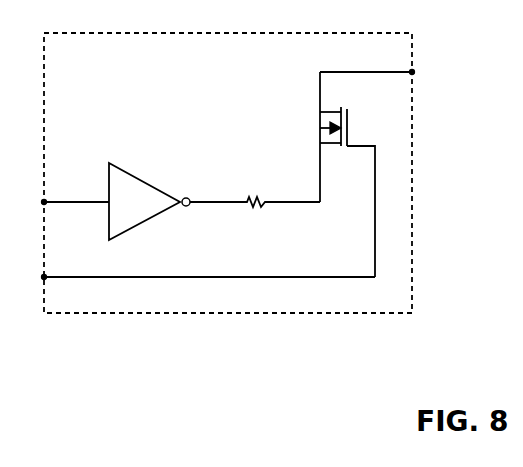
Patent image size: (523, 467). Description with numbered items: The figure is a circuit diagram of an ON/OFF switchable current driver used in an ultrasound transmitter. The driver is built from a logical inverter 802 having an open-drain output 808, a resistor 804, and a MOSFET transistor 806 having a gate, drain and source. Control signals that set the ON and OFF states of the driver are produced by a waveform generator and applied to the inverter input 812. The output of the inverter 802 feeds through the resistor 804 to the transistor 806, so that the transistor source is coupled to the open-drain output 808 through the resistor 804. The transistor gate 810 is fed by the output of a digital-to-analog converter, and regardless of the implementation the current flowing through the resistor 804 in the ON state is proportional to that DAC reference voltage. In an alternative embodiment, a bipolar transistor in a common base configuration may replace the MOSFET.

The logical inverter 802 is at (113, 167).
The resistor 804 is at (255, 219).
The MOSFET transistor 806 is at (320, 128).
The open-drain output 808 is at (411, 71).
The transistor gate 810 is at (46, 275).
The inverter input 812 is at (46, 199).